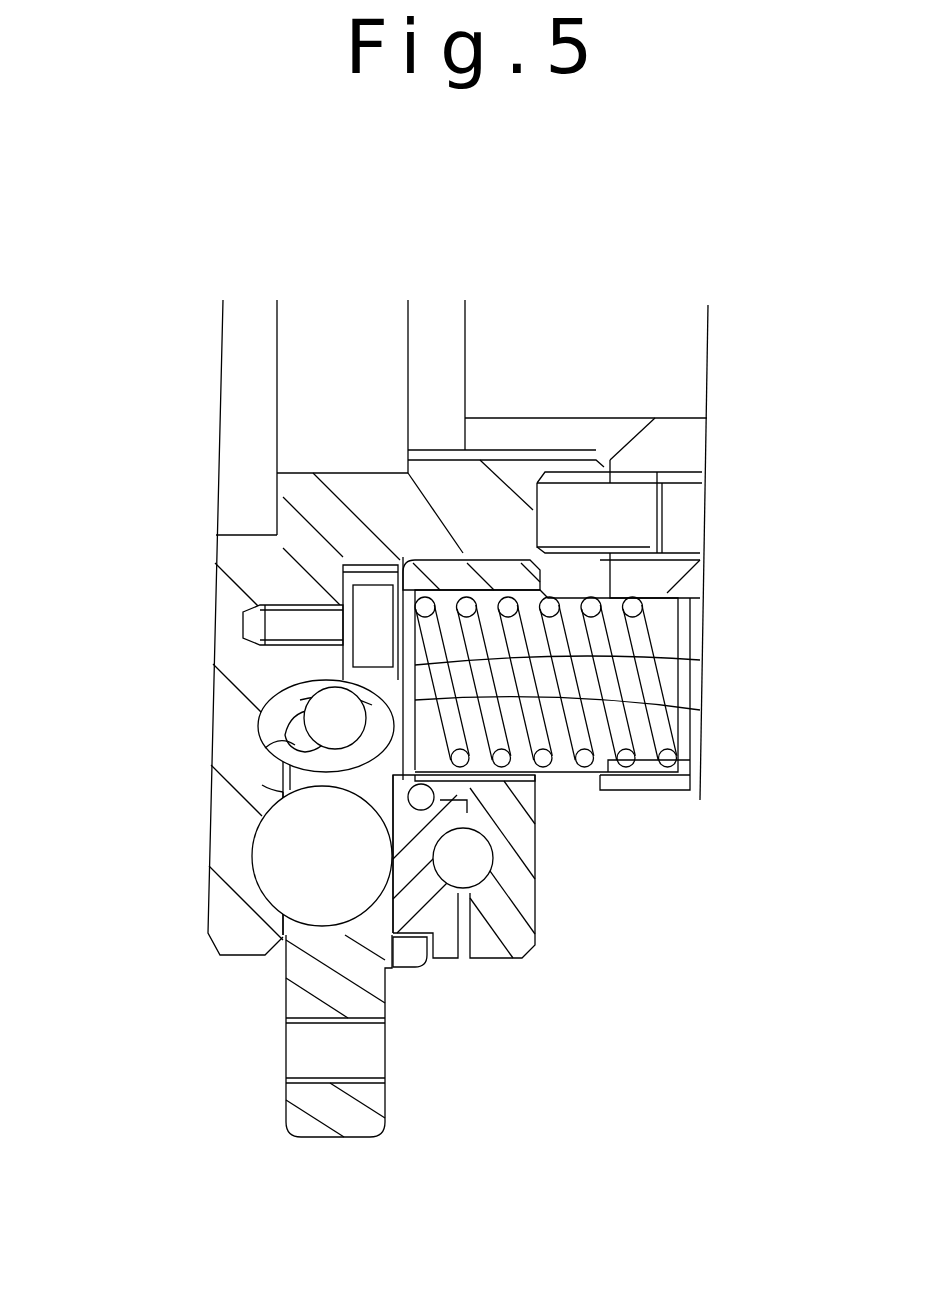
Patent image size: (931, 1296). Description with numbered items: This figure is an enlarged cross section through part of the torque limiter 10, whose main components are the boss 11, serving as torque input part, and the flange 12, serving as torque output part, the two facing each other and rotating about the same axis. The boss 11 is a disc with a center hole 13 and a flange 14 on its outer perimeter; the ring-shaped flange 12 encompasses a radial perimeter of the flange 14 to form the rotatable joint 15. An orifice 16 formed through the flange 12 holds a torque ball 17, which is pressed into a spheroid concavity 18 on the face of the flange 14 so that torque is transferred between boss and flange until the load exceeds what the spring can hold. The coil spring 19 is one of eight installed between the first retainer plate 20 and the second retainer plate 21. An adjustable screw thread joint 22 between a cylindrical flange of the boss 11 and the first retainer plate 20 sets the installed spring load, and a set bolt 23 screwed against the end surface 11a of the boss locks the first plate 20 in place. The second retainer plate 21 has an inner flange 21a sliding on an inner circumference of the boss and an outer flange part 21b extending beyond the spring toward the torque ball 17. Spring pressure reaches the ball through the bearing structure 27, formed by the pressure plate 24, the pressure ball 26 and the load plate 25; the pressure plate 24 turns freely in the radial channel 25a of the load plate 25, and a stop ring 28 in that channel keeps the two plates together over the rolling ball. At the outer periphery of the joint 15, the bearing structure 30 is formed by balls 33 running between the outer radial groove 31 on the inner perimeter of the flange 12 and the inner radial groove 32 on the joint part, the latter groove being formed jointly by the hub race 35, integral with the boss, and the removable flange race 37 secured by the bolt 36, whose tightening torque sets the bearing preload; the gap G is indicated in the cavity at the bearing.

The torque limiter 10 is at (742, 396).
The boss 11 is at (240, 547).
The end surface 11a is at (657, 502).
The flange 12 is at (388, 1100).
The center hole 13 is at (375, 472).
The flange 14 is at (240, 958).
The rotatable joint 15 is at (142, 290).
The orifice 16 is at (395, 950).
The torque ball 17 is at (272, 876).
The spheroid concavity 18 is at (268, 818).
The coil spring 19 is at (655, 628).
The first retainer plate 20 is at (692, 778).
The second retainer plate 21 is at (655, 735).
The inner flange 21a is at (463, 575).
The outer flange part 21b is at (660, 790).
The screw thread joint 22 is at (528, 450).
The set bolt 23 is at (645, 530).
The pressure plate 24 is at (460, 962).
The load plate 25 is at (560, 772).
The radial channel 25a is at (496, 790).
The pressure ball 26 is at (492, 858).
The bearing structure 27 is at (488, 896).
The stop ring 28 is at (262, 792).
The bearing structure 30 is at (288, 678).
The outer radial groove 31 is at (300, 736).
The inner radial groove 32 is at (308, 700).
The ball 33 is at (600, 692).
The hub race 35 is at (295, 605).
The bolt 36 is at (340, 590).
The flange race 37 is at (373, 577).
The gap G is at (262, 745).